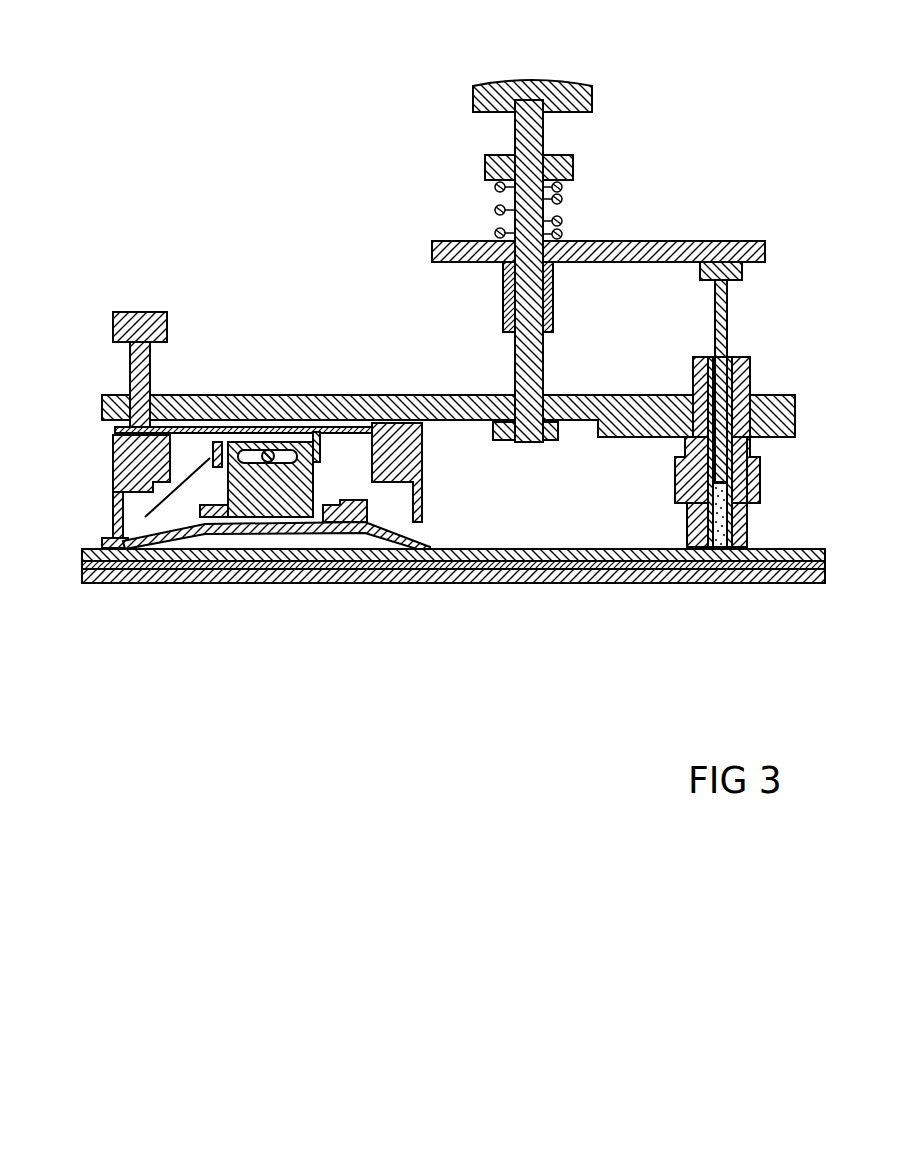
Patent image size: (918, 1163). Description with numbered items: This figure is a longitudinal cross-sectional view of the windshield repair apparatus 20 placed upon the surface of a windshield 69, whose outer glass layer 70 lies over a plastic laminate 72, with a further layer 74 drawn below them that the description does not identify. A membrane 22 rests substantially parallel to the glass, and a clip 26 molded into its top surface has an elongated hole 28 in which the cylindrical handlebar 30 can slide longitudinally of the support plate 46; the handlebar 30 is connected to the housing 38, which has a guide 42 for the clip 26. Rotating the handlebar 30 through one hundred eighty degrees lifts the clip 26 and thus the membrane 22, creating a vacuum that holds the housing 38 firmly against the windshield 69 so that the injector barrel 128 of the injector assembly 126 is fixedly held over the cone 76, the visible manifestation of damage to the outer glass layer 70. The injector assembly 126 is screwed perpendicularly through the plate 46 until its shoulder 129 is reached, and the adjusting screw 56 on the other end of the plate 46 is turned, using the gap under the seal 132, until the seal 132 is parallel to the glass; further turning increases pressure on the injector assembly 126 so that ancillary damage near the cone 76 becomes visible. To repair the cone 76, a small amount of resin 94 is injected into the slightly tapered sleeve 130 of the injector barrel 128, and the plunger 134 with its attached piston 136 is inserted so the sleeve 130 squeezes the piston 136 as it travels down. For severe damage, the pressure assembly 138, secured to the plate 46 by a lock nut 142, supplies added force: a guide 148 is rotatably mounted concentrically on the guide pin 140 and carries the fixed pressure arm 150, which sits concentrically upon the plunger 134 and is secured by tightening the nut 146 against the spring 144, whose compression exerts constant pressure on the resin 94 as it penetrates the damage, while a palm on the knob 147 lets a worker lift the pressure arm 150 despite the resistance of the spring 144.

The windshield repair apparatus 20 is at (160, 186).
The membrane 22 is at (102, 543).
The clip 26 is at (315, 483).
The elongated hole 28 is at (282, 448).
The handlebar 30 is at (268, 450).
The housing 38 is at (113, 455).
The guide 42 is at (117, 506).
The support plate 46 is at (200, 393).
The adjusting screw 56 is at (140, 312).
The windshield 69 is at (560, 615).
The outer glass layer 70 is at (82, 558).
The plastic laminate 72 is at (82, 568).
The bottom base plate 74 is at (82, 579).
The cone 76 is at (720, 558).
The resin 94 is at (747, 514).
The injector assembly 126 is at (770, 378).
The injector barrel 128 is at (693, 365).
The shoulder 129 is at (678, 480).
The sleeve 130 is at (730, 357).
The seal 132 is at (690, 543).
The plunger 134 is at (728, 313).
The piston 136 is at (745, 472).
The pressure assembly 138 is at (623, 143).
The guide pin 140 is at (517, 140).
The lock nut 142 is at (548, 437).
The spring 144 is at (492, 207).
The nut 146 is at (485, 162).
The knob 147 is at (470, 88).
The guide 148 is at (502, 273).
The pressure arm 150 is at (432, 246).